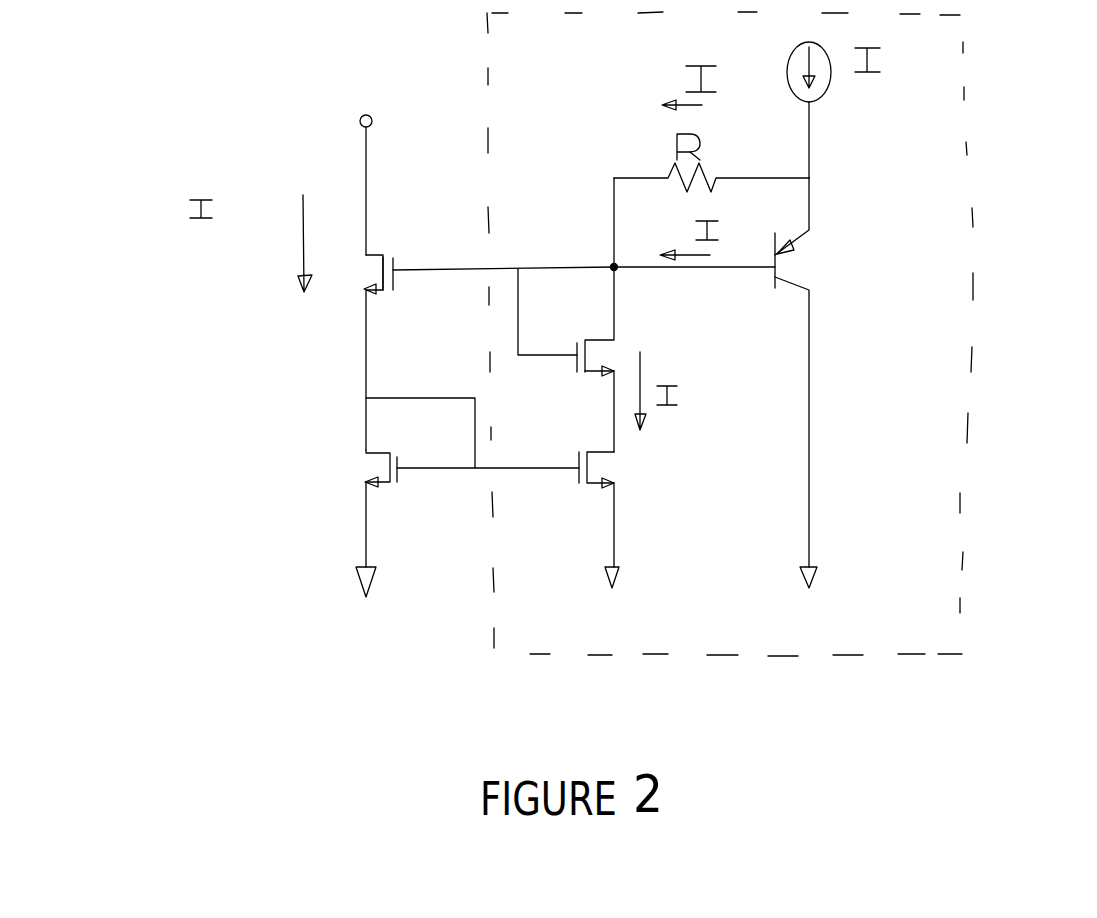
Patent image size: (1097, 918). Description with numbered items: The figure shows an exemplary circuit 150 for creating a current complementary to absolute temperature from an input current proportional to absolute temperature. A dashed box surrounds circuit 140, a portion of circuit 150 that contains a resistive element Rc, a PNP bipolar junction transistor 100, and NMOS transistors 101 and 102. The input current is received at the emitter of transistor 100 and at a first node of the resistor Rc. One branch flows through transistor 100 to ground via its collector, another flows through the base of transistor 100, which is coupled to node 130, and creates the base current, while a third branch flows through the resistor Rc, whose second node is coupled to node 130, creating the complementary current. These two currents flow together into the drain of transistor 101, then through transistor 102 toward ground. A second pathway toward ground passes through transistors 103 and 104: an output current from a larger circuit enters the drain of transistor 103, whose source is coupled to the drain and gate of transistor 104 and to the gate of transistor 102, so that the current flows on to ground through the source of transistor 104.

The PNP bipolar junction transistor 100 is at (756, 383).
The NMOS transistor 101 is at (625, 359).
The NMOS transistor 102 is at (564, 520).
The NMOS transistor 103 is at (489, 338).
The NMOS transistor 104 is at (415, 497).
The node 130 is at (613, 266).
The circuit 140 is at (918, 637).
The circuit 150 is at (1062, 107).